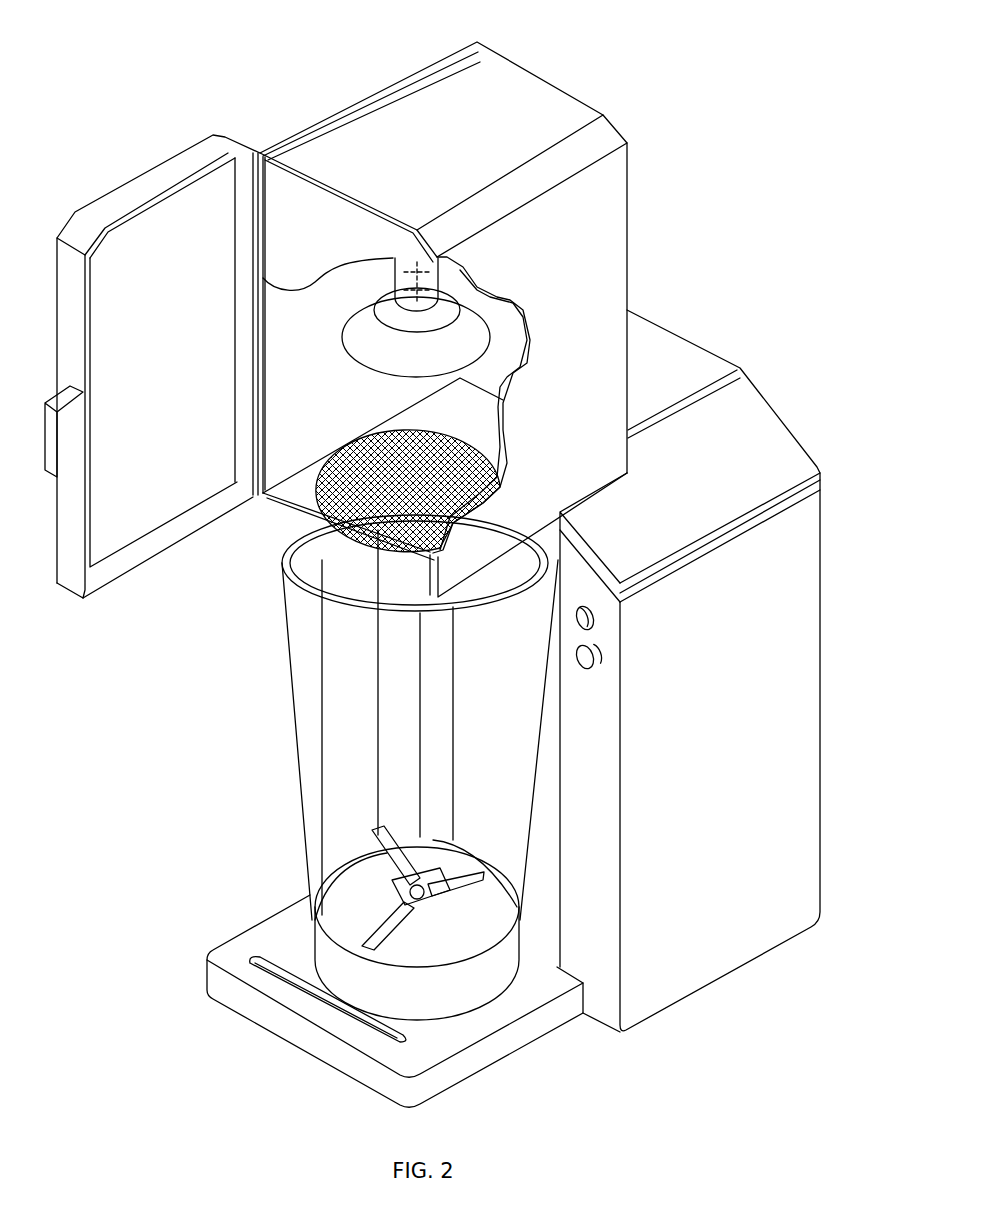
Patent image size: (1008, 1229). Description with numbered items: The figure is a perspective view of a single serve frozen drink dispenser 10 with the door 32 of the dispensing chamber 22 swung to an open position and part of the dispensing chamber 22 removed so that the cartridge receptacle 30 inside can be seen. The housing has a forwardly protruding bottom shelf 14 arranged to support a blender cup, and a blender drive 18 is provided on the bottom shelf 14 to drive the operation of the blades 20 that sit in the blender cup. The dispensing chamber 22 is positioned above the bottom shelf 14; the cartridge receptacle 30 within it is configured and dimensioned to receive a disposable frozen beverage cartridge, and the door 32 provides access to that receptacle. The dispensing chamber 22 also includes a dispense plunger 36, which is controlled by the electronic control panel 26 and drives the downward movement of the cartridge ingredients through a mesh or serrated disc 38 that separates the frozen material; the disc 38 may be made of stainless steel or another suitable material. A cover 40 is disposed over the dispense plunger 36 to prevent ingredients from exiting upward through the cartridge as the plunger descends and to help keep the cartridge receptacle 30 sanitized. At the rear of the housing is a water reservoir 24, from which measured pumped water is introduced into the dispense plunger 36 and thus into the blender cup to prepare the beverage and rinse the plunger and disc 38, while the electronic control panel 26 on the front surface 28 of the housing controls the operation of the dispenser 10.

The frozen drink dispenser 10 is at (600, 66).
The bottom shelf 14 is at (223, 938).
The blender drive 18 is at (432, 923).
The blades 20 is at (352, 852).
The dispensing chamber 22 is at (337, 133).
The water reservoir 24 is at (780, 815).
The electronic control panel 26 is at (587, 637).
The front surface 28 is at (597, 708).
The cartridge receptacle 30 is at (458, 405).
The door 32 is at (145, 183).
The dispense plunger 36 is at (395, 288).
The mesh or serrated disc 38 is at (355, 540).
The cover 40 is at (373, 353).